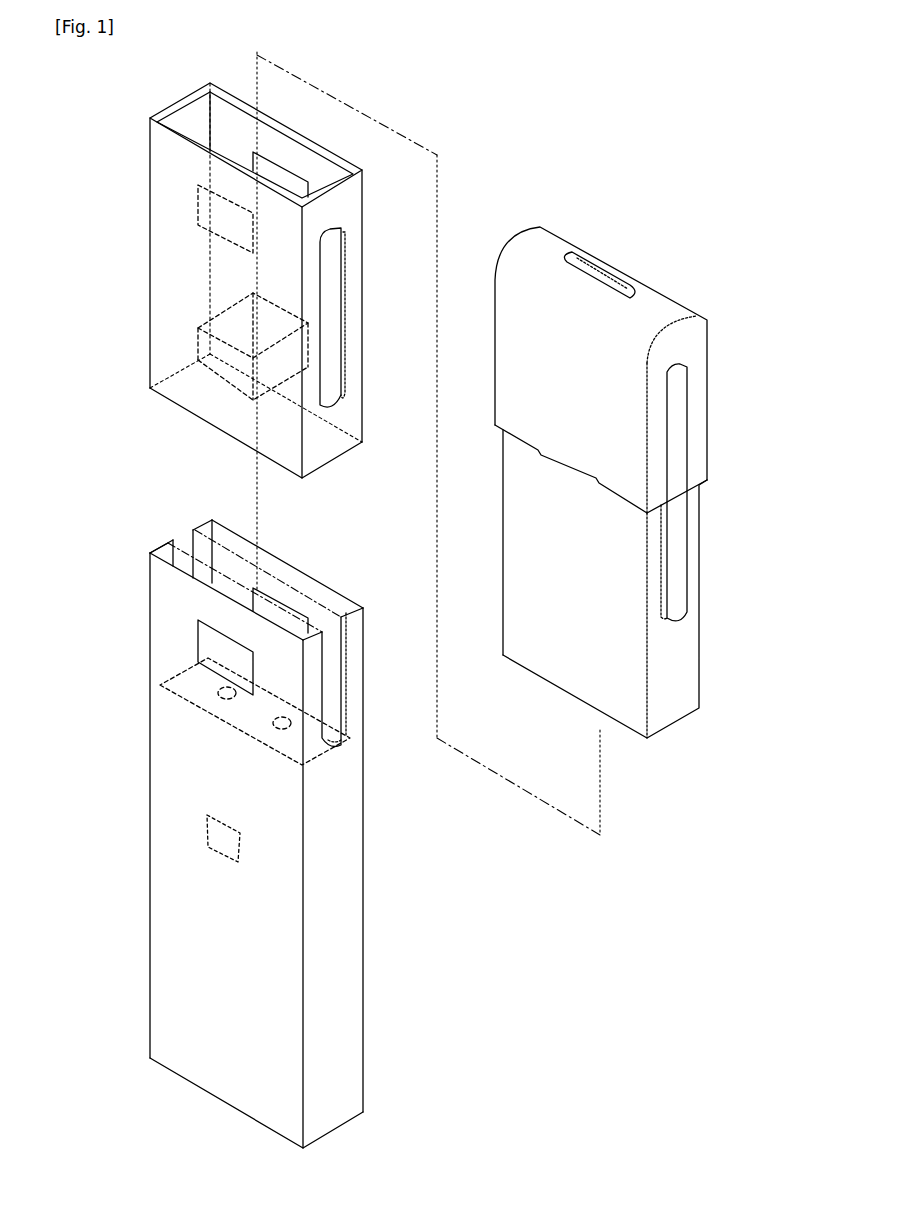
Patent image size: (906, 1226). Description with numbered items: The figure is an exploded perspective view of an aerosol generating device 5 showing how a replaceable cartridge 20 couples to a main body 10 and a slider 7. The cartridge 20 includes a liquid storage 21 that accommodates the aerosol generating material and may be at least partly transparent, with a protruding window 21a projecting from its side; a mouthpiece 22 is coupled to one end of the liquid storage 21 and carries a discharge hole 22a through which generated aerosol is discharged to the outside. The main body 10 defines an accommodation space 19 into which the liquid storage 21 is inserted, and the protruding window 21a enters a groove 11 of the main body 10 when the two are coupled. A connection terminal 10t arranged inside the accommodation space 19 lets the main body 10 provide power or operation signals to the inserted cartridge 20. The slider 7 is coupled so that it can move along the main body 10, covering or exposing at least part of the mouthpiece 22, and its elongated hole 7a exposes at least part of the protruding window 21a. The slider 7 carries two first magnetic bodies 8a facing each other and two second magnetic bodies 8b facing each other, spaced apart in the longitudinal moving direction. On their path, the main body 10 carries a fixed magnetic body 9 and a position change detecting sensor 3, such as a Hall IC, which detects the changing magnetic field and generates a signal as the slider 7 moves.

The aerosol generating device 5 is at (589, 64).
The slider 7 is at (148, 149).
The elongated hole 7a is at (335, 288).
The first magnetic bodies 8a is at (290, 183).
The second magnetic bodies 8b is at (257, 317).
The main body 10 is at (122, 593).
The connection terminal 10t is at (220, 687).
The groove 11 is at (190, 548).
The fixed magnetic body 9 is at (282, 612).
The accommodation space 19 is at (333, 608).
The position change detecting sensor 3 is at (220, 842).
The cartridge 20 is at (712, 297).
The liquid storage 21 is at (512, 532).
The protruding window 21a is at (677, 545).
The mouthpiece 22 is at (503, 343).
The discharge hole 22a is at (580, 262).